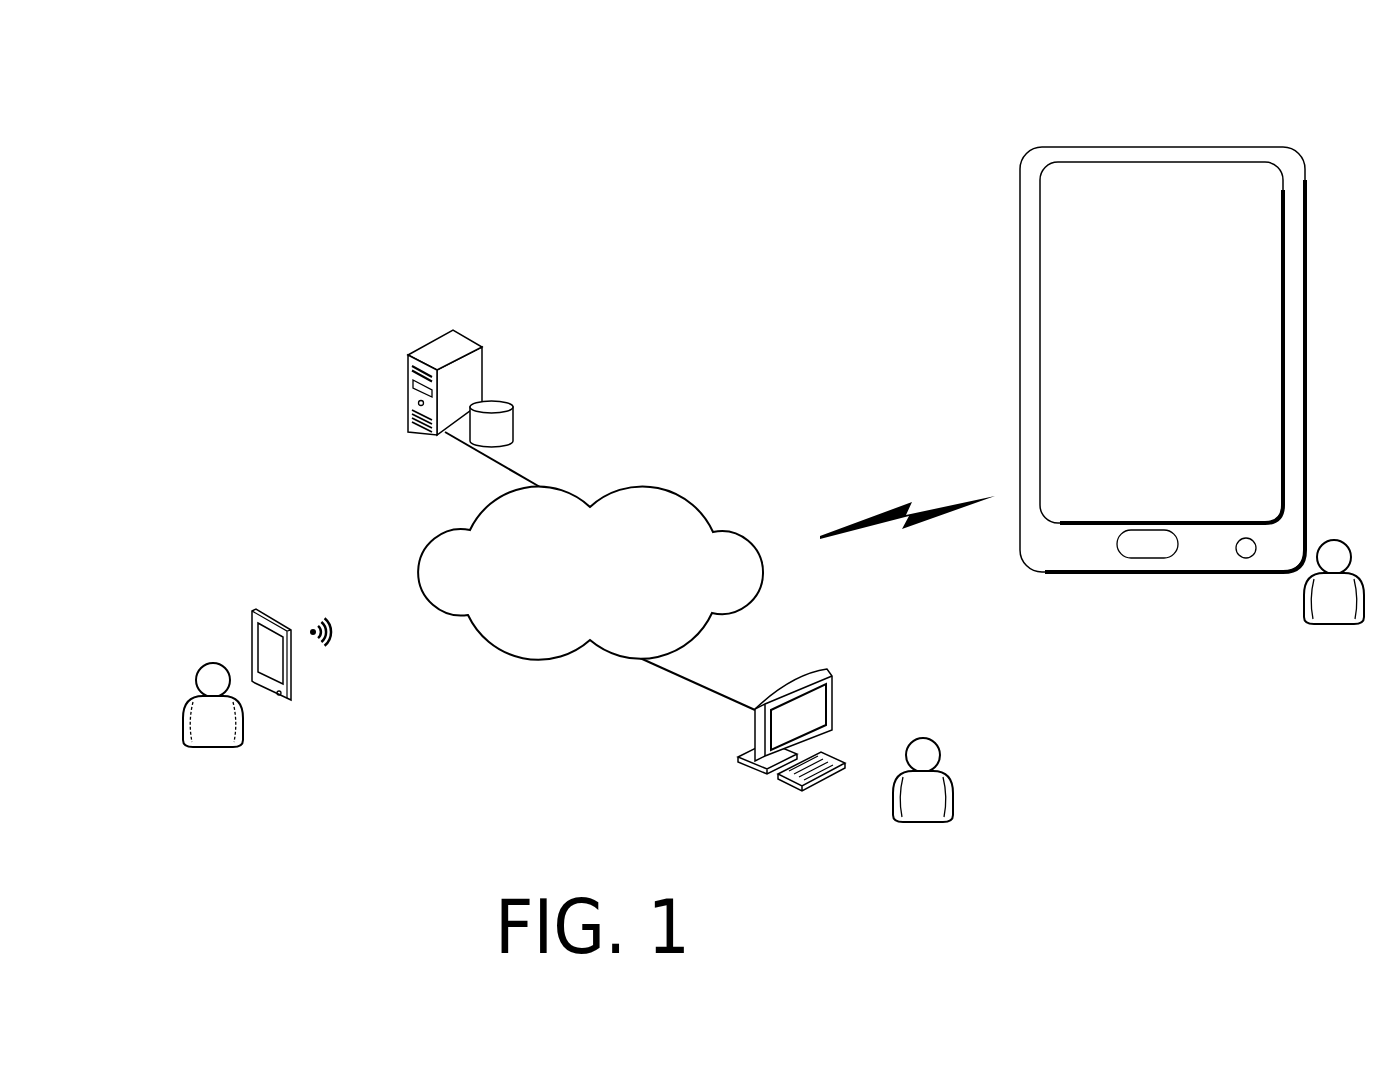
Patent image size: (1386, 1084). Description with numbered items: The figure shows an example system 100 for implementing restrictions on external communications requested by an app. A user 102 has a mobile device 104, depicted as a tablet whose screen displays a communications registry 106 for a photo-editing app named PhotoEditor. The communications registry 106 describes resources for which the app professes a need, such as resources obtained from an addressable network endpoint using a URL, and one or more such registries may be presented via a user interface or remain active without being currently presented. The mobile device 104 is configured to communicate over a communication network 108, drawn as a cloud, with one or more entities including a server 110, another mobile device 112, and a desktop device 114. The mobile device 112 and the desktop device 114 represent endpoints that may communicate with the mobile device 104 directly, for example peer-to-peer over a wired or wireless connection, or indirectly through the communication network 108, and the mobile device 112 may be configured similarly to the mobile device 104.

The system 100 is at (330, 65).
The user 102 is at (1339, 637).
The mobile device 104 is at (1020, 360).
The communications registry 106 is at (1258, 228).
The communication network 108 is at (609, 598).
The server 110 is at (394, 335).
The mobile device 112 is at (235, 612).
The desktop device 114 is at (865, 705).